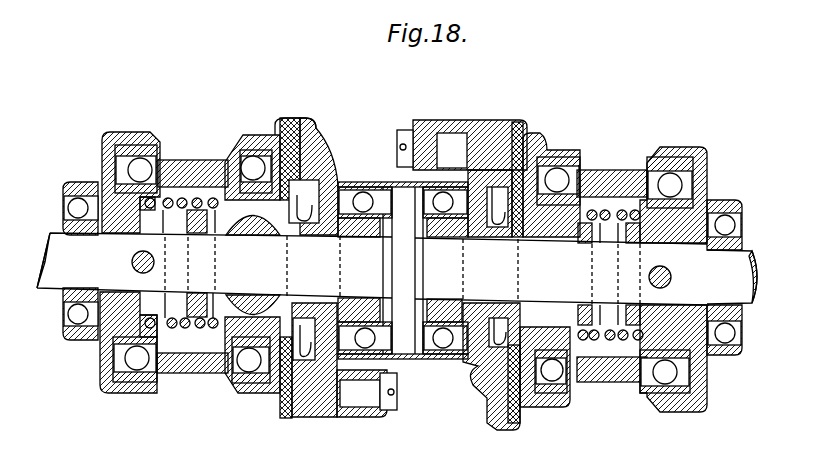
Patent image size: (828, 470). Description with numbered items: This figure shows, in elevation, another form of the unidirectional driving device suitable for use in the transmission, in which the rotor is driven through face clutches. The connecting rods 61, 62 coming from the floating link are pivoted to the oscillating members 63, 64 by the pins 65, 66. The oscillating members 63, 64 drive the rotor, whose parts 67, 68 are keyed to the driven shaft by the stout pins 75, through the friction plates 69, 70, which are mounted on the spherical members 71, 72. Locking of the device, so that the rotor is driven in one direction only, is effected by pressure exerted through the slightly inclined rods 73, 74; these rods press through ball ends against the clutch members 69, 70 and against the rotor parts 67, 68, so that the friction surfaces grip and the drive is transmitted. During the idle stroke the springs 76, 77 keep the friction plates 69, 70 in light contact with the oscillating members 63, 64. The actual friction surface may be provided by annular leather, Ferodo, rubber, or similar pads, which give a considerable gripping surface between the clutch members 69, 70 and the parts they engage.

The connecting rod 61 is at (413, 121).
The connecting rod 62 is at (385, 420).
The oscillating member 63 is at (462, 153).
The oscillating member 64 is at (308, 172).
The pin 65 is at (532, 138).
The pin 66 is at (310, 387).
The rotor part 67 is at (677, 230).
The rotor part 68 is at (112, 205).
The friction plate 69 is at (548, 162).
The friction plate 70 is at (283, 140).
The spherical member 71 is at (627, 325).
The spherical member 72 is at (223, 332).
The inclined rod 73 is at (618, 190).
The inclined rod 74 is at (198, 183).
The stout pin 75 is at (140, 273).
The spring 76 is at (635, 212).
The spring 77 is at (177, 200).